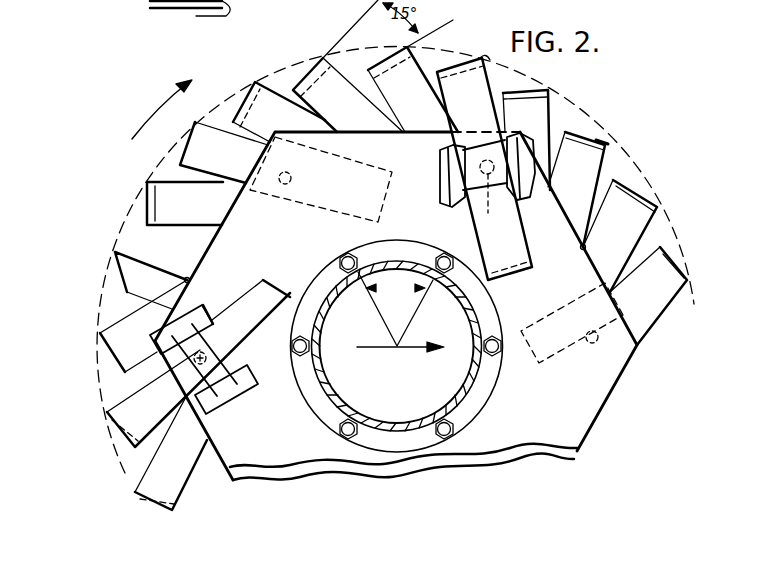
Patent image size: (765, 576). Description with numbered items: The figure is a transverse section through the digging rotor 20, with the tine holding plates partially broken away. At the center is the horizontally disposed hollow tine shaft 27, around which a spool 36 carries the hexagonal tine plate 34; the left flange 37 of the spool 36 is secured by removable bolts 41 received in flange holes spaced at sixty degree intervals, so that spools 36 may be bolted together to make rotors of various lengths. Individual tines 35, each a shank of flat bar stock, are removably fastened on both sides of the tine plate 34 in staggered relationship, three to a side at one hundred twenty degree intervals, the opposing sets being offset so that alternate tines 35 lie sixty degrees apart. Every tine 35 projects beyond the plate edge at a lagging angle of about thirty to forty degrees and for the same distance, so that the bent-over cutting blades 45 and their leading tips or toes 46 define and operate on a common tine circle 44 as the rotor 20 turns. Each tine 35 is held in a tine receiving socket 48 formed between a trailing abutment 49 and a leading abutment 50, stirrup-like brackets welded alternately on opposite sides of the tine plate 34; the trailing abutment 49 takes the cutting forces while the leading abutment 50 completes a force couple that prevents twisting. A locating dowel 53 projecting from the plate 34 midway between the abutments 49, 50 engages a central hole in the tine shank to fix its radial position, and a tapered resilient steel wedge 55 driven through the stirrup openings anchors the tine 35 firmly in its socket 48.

The digging rotor 20 is at (208, 247).
The tine shaft 27 is at (467, 387).
The tine plate 34 is at (228, 466).
The tine 35 is at (567, 130).
The spool 36 is at (321, 384).
The left flange 37 is at (315, 417).
The removable bolt 41 is at (350, 403).
The tine circle 44 is at (638, 167).
The cutting blade 45 is at (452, 68).
The tip or toe 46 is at (318, 60).
The tine receiving socket 48 is at (317, 180).
The trailing abutment 49 is at (441, 152).
The leading abutment 50 is at (603, 140).
The locating dowel 53 is at (310, 178).
The tapered resilient steel wedge 55 is at (520, 198).